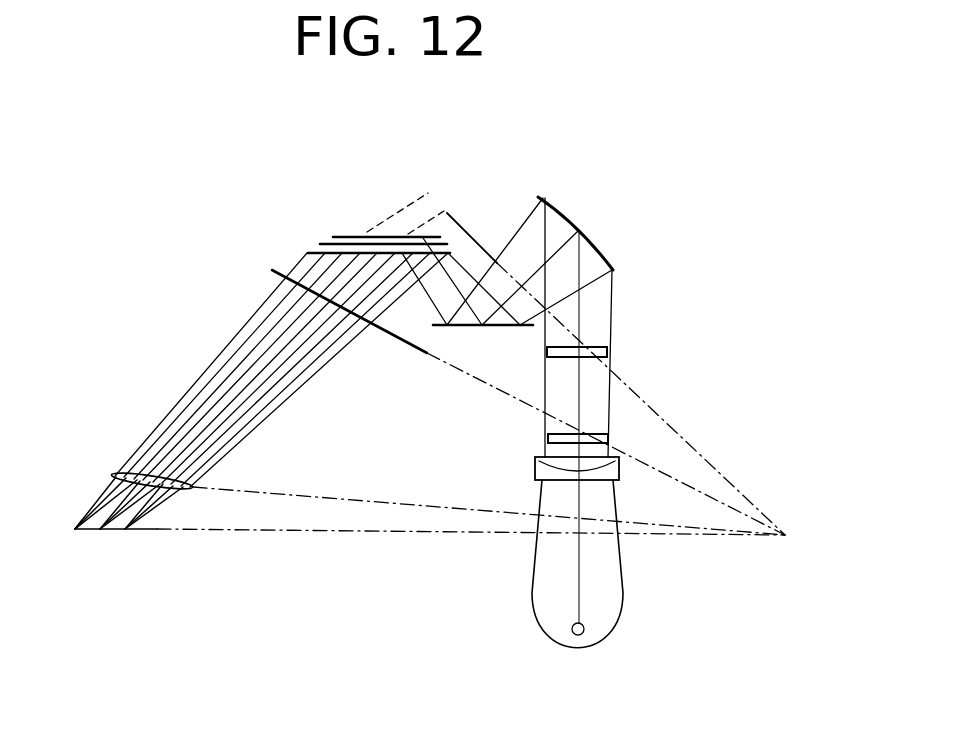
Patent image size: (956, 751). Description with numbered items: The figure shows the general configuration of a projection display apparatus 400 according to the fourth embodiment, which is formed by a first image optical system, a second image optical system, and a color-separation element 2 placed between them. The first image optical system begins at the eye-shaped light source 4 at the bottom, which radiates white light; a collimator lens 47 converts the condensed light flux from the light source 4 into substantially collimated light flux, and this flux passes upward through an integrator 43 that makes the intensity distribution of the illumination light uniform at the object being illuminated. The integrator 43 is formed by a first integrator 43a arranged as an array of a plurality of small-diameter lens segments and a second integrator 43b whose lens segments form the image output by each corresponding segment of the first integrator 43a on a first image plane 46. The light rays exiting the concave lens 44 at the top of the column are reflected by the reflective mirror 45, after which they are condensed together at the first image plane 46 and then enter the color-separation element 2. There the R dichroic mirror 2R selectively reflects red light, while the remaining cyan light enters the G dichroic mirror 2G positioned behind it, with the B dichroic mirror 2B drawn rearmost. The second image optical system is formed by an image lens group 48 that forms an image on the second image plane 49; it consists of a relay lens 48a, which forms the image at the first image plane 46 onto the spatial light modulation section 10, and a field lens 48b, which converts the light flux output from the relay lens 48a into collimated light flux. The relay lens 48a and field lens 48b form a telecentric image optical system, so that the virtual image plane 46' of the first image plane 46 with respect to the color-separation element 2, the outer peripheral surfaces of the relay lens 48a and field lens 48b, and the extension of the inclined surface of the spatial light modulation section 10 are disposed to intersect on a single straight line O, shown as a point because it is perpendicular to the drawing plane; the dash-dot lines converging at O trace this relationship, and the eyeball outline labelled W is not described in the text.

The projection display apparatus 400 is at (180, 168).
The color-separation element 2 is at (337, 155).
The R dichroic mirror 2R is at (307, 252).
The G dichroic mirror 2G is at (322, 243).
The B dichroic mirror 2B is at (357, 237).
The virtual image plane 46' is at (424, 194).
The first image plane 46 is at (474, 245).
The concave lens 44 is at (597, 247).
The reflective mirror 45 is at (512, 327).
The integrator 43 is at (744, 347).
The first integrator 43a is at (606, 438).
The second integrator 43b is at (605, 352).
The collimator lens 47 is at (620, 470).
The eyeball W is at (620, 573).
The light source 4 is at (617, 620).
The straight line O is at (486, 459).
The image lens group 48 is at (167, 282).
The relay lens 48a is at (272, 271).
The field lens 48b is at (117, 473).
The second image plane 49 is at (78, 527).
The spatial light modulation section 10 is at (112, 531).